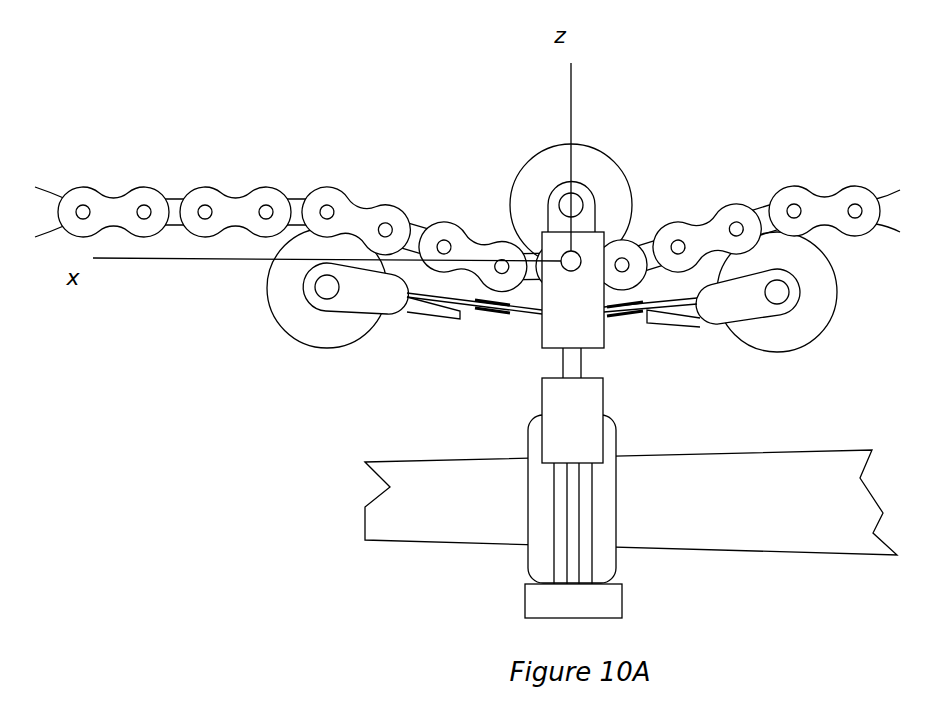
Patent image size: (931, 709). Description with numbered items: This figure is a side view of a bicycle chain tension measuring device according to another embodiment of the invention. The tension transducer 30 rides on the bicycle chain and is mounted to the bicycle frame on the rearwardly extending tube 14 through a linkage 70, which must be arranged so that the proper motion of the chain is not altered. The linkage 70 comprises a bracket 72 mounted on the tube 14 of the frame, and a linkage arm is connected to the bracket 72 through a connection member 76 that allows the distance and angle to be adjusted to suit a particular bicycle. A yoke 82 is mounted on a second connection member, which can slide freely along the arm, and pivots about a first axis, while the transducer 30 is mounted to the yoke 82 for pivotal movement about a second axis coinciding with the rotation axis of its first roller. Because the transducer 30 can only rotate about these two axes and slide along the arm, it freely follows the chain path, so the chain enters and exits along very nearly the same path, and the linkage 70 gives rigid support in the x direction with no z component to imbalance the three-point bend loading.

The tension transducer 30 is at (453, 160).
The rearwardly extending tube 14 is at (452, 500).
The linkage 70 is at (467, 335).
The bracket 72 is at (617, 503).
The connection member 76 is at (567, 598).
The yoke 82 is at (579, 310).